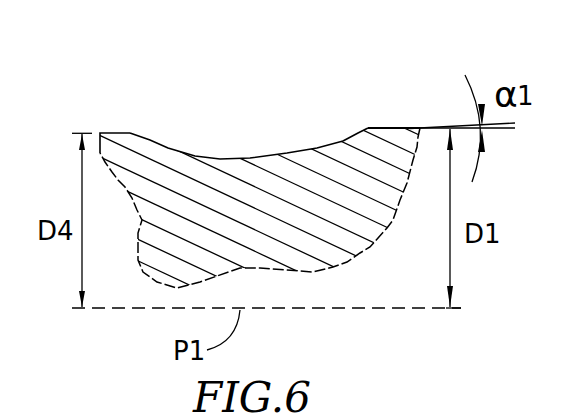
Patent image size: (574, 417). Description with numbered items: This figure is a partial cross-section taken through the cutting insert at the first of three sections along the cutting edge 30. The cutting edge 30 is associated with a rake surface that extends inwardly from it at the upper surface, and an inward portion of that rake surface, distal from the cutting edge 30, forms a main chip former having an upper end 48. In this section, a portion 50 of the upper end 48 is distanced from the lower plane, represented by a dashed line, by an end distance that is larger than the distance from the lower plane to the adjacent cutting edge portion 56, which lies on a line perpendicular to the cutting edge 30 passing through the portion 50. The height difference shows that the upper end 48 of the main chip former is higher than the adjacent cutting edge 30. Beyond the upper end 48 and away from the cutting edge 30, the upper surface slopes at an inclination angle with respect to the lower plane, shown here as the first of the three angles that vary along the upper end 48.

The cutting edge 30 is at (103, 128).
The upper end 48 is at (378, 118).
The portion of the upper end 50 is at (367, 122).
The cutting edge portion 56 is at (97, 125).